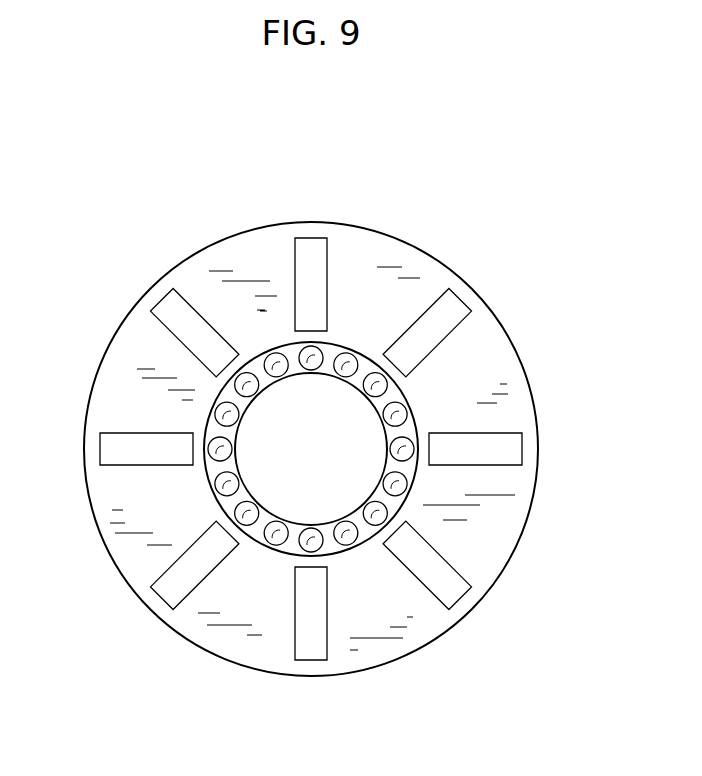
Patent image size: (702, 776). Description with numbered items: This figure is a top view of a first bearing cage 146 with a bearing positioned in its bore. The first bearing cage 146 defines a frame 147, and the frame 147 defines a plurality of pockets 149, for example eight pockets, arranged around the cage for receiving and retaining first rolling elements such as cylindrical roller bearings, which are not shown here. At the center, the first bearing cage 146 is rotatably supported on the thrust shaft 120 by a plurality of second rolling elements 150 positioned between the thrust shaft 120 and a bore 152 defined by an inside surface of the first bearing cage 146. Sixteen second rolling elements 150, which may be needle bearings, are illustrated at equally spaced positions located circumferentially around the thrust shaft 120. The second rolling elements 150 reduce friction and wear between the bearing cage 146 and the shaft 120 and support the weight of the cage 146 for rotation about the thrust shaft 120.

The first bearing cage 146 is at (524, 167).
The frame 147 is at (503, 357).
The pockets 149 is at (311, 252).
The second rolling elements 150 is at (348, 355).
The bore 152 is at (367, 544).
The thrust shaft 120 is at (355, 425).